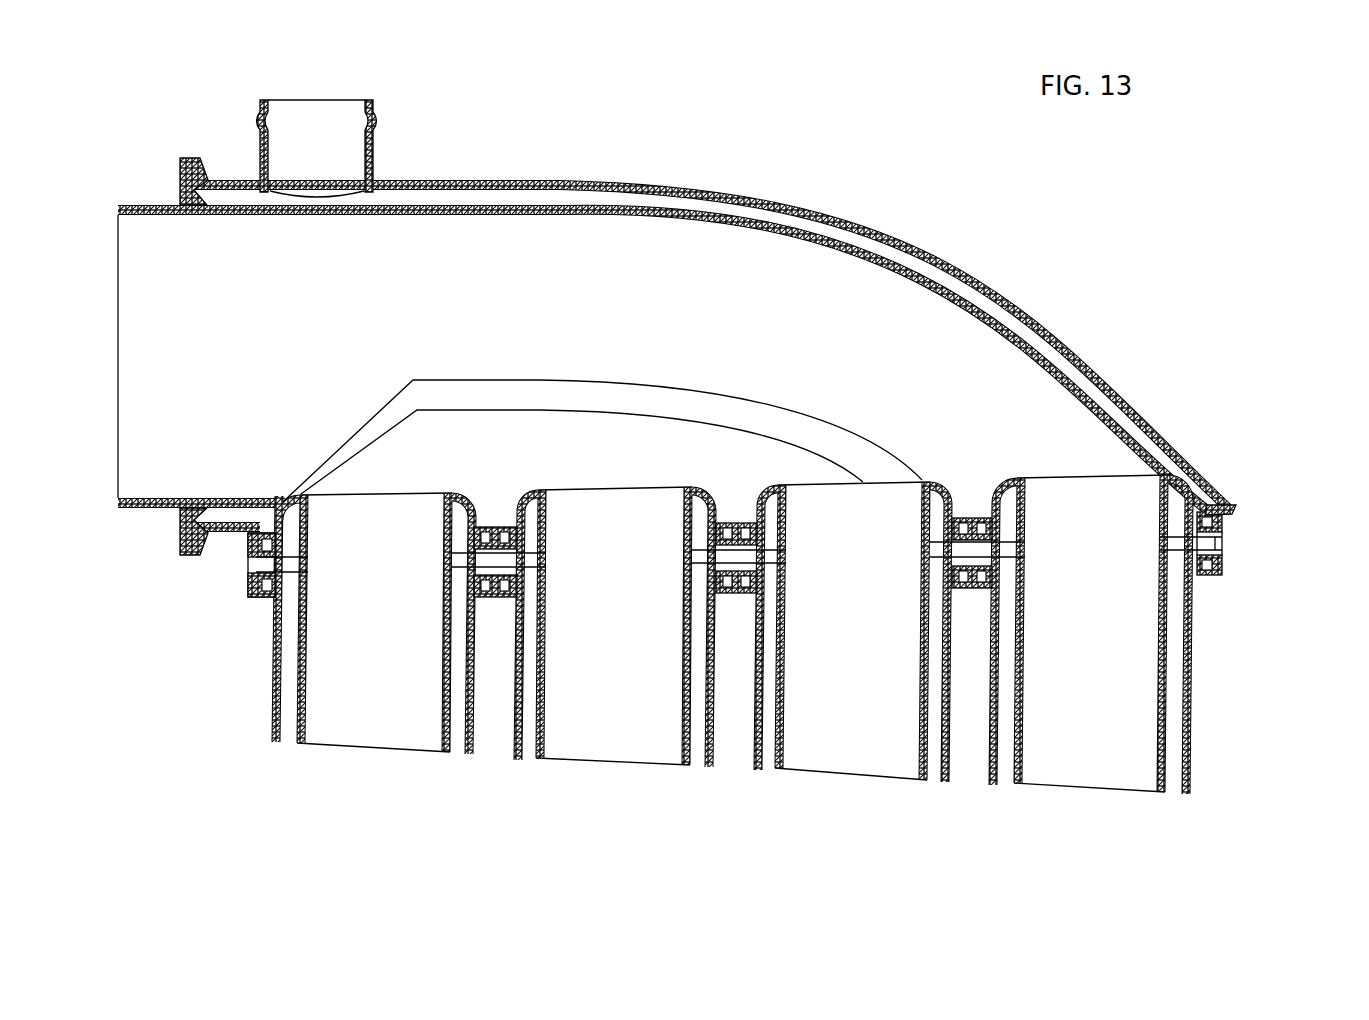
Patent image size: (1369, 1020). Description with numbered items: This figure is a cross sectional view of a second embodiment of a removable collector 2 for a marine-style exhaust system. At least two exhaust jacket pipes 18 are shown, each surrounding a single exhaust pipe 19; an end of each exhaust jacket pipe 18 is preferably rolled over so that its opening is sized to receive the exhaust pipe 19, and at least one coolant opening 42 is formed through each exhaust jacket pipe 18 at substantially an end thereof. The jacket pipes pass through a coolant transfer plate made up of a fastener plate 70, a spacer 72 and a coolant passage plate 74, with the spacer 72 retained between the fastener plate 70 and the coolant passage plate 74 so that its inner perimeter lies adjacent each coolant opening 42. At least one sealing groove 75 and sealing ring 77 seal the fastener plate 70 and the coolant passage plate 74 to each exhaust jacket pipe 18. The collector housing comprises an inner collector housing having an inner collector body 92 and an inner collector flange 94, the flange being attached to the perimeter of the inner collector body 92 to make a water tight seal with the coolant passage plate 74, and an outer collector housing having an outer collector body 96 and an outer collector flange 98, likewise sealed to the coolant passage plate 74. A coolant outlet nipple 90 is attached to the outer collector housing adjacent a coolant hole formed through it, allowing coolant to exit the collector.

The removable collector 2 is at (108, 727).
The exhaust jacket pipe 18 is at (520, 718).
The exhaust pipe 19 is at (687, 713).
The coolant opening 42 is at (528, 558).
The fastener plate 70 is at (1215, 577).
The spacer 72 is at (1223, 547).
The coolant passage plate 74 is at (1228, 510).
The sealing groove 75 is at (252, 557).
The sealing ring 77 is at (282, 545).
The coolant outlet nipple 90 is at (378, 123).
The inner collector body 92 is at (897, 267).
The inner collector flange 94 is at (642, 447).
The outer collector body 96 is at (1077, 341).
The outer collector flange 98 is at (566, 401).